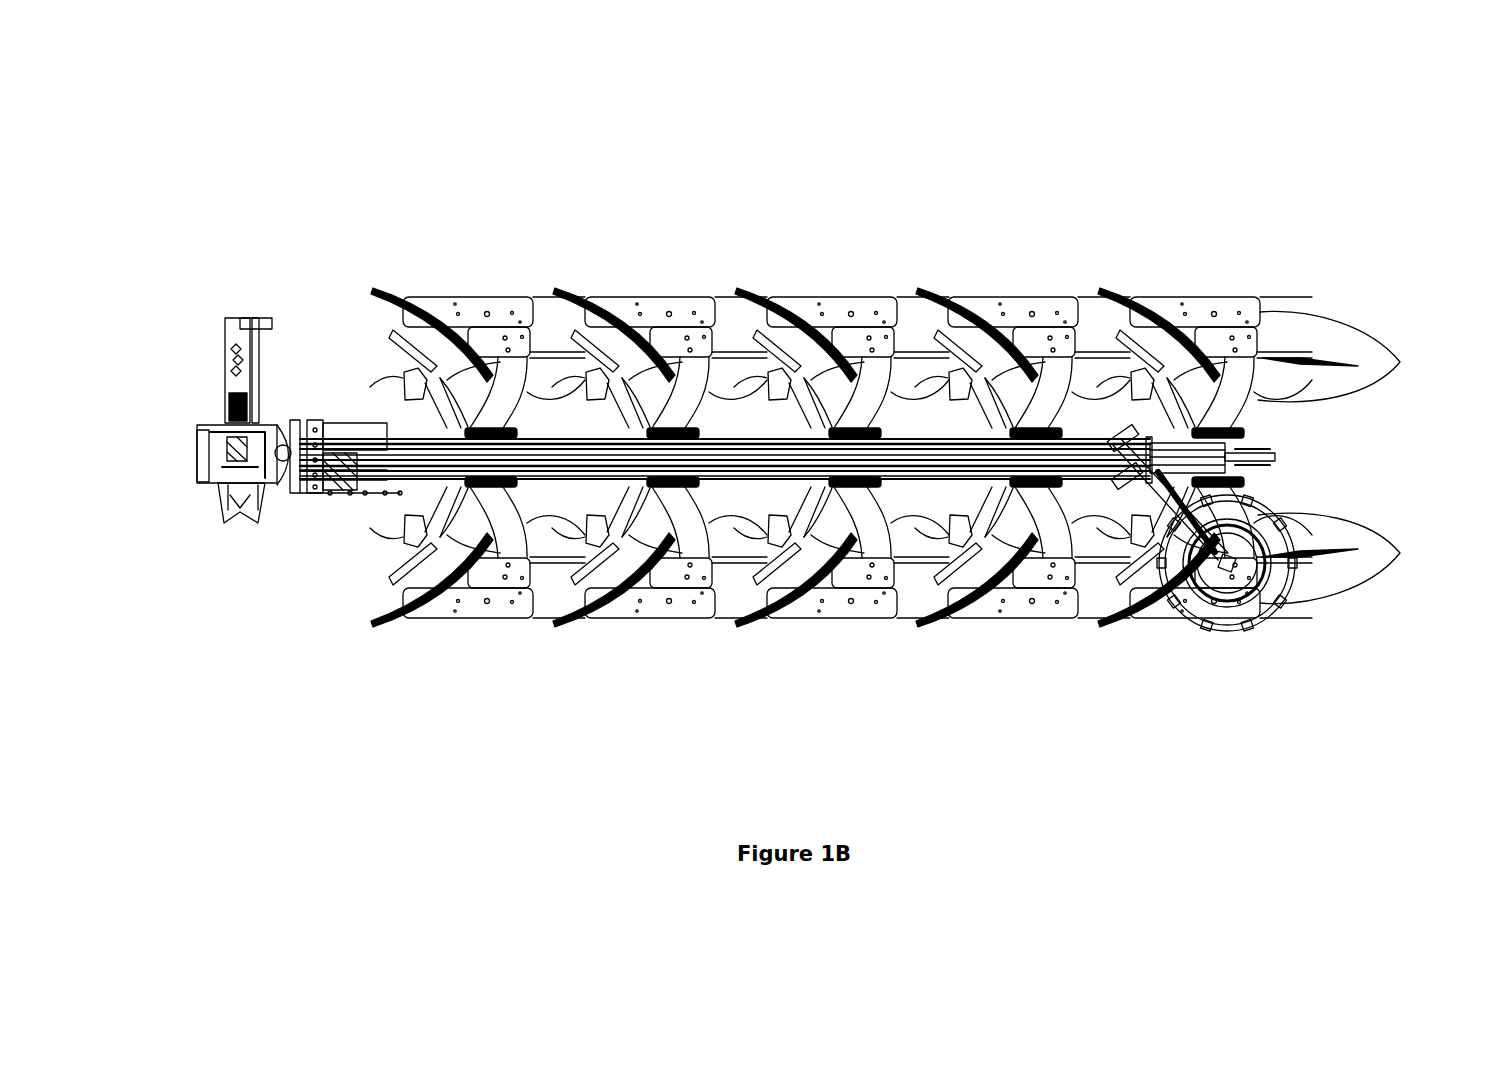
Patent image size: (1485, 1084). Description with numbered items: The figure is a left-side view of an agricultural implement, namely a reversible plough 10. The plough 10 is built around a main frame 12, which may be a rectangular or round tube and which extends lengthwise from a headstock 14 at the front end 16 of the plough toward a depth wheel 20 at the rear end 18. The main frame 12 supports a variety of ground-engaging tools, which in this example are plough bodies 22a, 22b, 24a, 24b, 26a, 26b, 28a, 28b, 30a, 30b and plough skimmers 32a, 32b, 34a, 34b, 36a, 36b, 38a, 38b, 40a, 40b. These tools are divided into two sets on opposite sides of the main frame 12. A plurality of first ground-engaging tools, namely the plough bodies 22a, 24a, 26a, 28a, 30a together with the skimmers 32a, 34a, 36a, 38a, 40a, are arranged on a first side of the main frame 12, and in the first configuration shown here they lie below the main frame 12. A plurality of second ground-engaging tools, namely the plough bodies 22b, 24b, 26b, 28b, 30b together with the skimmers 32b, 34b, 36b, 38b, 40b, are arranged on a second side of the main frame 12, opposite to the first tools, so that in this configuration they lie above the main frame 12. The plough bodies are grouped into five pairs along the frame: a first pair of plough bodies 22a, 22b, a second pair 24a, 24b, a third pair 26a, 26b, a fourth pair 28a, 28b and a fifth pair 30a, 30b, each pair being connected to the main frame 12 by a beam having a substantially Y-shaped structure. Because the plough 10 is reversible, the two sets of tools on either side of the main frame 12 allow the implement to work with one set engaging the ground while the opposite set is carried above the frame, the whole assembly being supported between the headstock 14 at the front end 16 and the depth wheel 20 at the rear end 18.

The plough 10 is at (178, 150).
The main frame 12 is at (950, 438).
The headstock 14 is at (237, 386).
The front end 16 is at (153, 456).
The rear end 18 is at (1365, 457).
The depth wheel 20 is at (1275, 535).
The plough body 22a is at (455, 636).
The plough body 22b is at (466, 278).
The plough body 24a is at (668, 636).
The plough body 24b is at (706, 278).
The plough body 26a is at (858, 636).
The plough body 26b is at (889, 281).
The plough body 28a is at (1033, 636).
The plough body 28b is at (1066, 278).
The plough body 30a is at (1181, 636).
The plough body 30b is at (1233, 278).
The plough skimmer 32a is at (412, 528).
The plough skimmer 32b is at (408, 360).
The plough skimmer 34a is at (570, 565).
The plough skimmer 34b is at (585, 335).
The plough skimmer 36a is at (757, 565).
The plough skimmer 36b is at (760, 335).
The plough skimmer 38a is at (942, 565).
The plough skimmer 38b is at (963, 372).
The plough skimmer 40a is at (1115, 575).
The plough skimmer 40b is at (1140, 358).